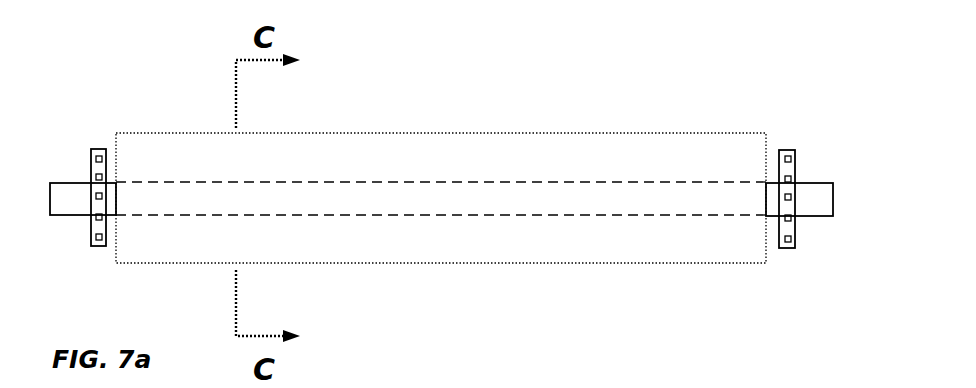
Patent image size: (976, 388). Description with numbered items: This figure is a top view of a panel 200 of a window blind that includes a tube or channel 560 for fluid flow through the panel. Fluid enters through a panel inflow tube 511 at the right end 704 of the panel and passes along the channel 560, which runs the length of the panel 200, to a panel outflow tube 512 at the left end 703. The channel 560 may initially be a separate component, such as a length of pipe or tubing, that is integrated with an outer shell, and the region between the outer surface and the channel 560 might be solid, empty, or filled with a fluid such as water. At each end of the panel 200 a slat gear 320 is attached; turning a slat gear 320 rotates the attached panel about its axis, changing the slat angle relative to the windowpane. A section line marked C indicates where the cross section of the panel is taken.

The panel 200 is at (532, 133).
The slat gear 320 is at (102, 247).
The panel inflow tube 511 is at (825, 182).
The panel outflow tube 512 is at (59, 183).
The tube or channel 560 is at (519, 215).
The left end 703 is at (123, 288).
The right end 704 is at (742, 280).